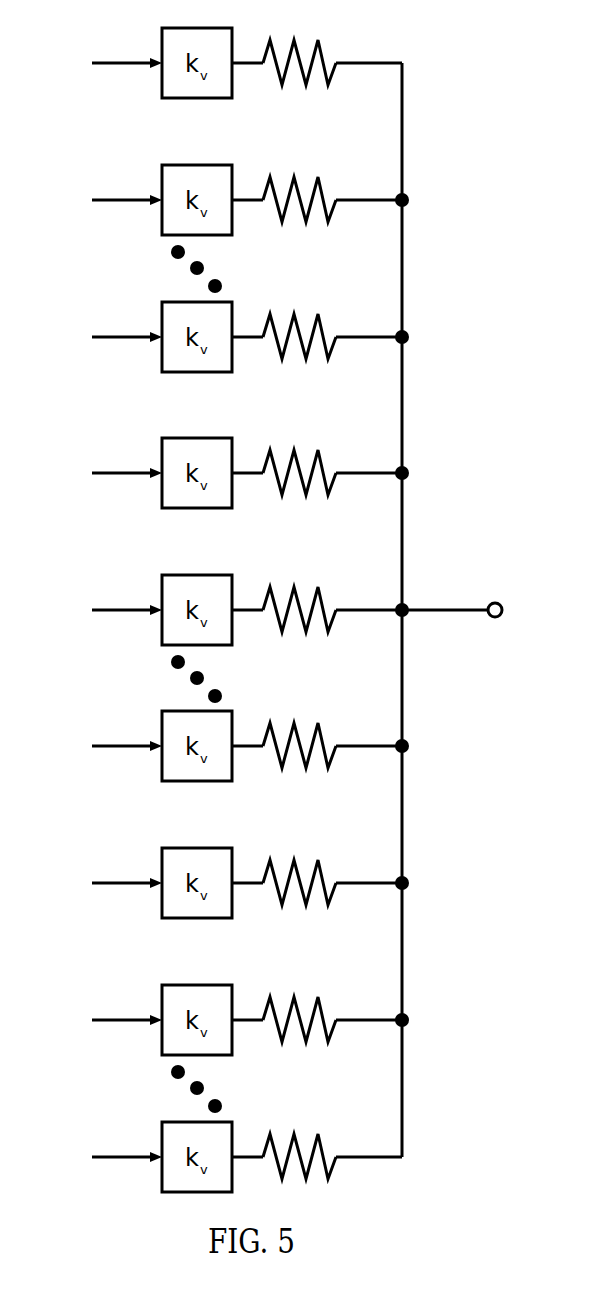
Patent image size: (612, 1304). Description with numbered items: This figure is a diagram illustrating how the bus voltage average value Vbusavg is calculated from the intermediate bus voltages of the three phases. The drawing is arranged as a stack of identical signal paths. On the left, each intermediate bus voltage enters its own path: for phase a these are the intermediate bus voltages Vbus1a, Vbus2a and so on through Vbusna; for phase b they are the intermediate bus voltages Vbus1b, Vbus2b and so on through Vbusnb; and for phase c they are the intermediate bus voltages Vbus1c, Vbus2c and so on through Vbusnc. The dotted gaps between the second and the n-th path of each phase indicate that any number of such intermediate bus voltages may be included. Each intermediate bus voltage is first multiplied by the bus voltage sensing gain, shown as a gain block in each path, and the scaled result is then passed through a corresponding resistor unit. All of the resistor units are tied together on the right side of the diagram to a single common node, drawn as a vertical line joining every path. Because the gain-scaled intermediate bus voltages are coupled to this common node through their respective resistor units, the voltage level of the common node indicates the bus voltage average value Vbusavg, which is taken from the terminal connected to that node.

The intermediate bus voltage Vbus1a is at (216, 54).
The intermediate bus voltage Vbus2a is at (216, 191).
The intermediate bus voltage Vbusna is at (216, 328).
The intermediate bus voltage Vbus1b is at (216, 464).
The intermediate bus voltage Vbus2b is at (216, 601).
The intermediate bus voltage Vbusnb is at (216, 737).
The intermediate bus voltage Vbus1c is at (216, 874).
The intermediate bus voltage Vbus2c is at (216, 1011).
The intermediate bus voltage Vbusnc is at (216, 1148).
The bus voltage average value Vbusavg is at (472, 579).